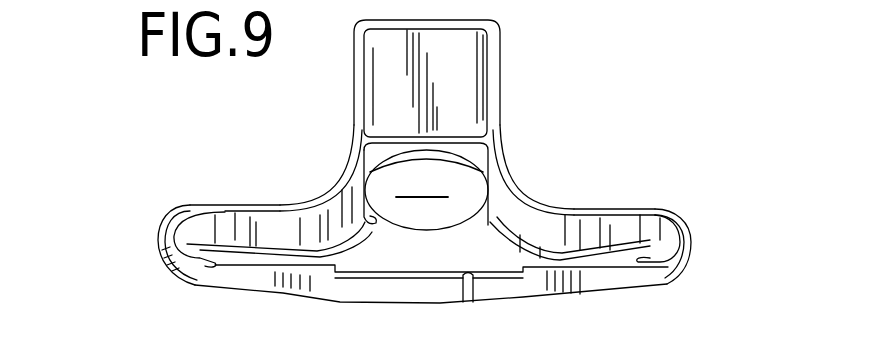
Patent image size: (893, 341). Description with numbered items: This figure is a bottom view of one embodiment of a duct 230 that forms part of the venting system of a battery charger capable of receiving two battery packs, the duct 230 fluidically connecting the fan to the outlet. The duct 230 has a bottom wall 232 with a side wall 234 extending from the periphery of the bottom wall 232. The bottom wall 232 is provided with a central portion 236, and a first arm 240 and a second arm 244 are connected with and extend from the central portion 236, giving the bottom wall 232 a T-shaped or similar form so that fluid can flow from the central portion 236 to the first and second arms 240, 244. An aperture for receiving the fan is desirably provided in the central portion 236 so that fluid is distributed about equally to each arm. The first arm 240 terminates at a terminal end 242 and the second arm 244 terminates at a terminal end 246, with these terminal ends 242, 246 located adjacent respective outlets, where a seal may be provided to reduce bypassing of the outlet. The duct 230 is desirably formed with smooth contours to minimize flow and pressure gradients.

The duct 230 is at (419, 177).
The bottom wall 232 is at (370, 250).
The side wall 234 is at (543, 275).
The central portion 236 is at (440, 238).
The first arm 240 is at (598, 232).
The terminal end 242 is at (672, 234).
The second arm 244 is at (205, 205).
The terminal end 246 is at (185, 238).